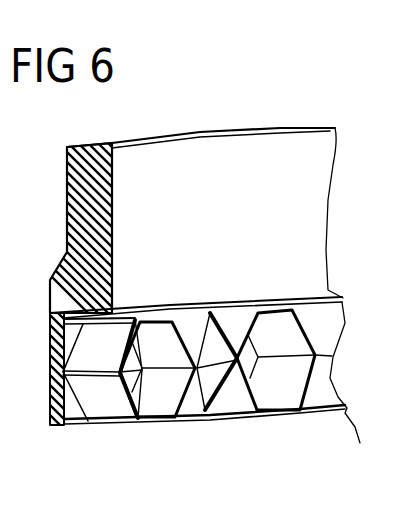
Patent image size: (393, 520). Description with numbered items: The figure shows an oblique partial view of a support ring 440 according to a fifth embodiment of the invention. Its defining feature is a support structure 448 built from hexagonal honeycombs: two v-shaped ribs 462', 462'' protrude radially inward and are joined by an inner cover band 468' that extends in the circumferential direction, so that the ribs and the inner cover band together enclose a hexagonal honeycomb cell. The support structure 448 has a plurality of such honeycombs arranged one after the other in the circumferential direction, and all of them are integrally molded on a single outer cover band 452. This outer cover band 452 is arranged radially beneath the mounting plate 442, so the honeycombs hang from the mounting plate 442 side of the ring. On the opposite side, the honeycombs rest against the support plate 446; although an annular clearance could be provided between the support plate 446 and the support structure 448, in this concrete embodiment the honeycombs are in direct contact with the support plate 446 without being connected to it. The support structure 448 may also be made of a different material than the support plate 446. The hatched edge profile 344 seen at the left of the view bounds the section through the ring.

The support ring 440 is at (274, 87).
The mounting plate 442 is at (263, 229).
The edge profile 344 is at (0, 296).
The support plate 446 is at (55, 427).
The outer cover band 452 is at (210, 307).
The support structure 448 is at (143, 431).
The v-shaped rib 462' is at (130, 346).
The inner cover band 468' is at (184, 399).
The v-shaped rib 462'' is at (267, 378).